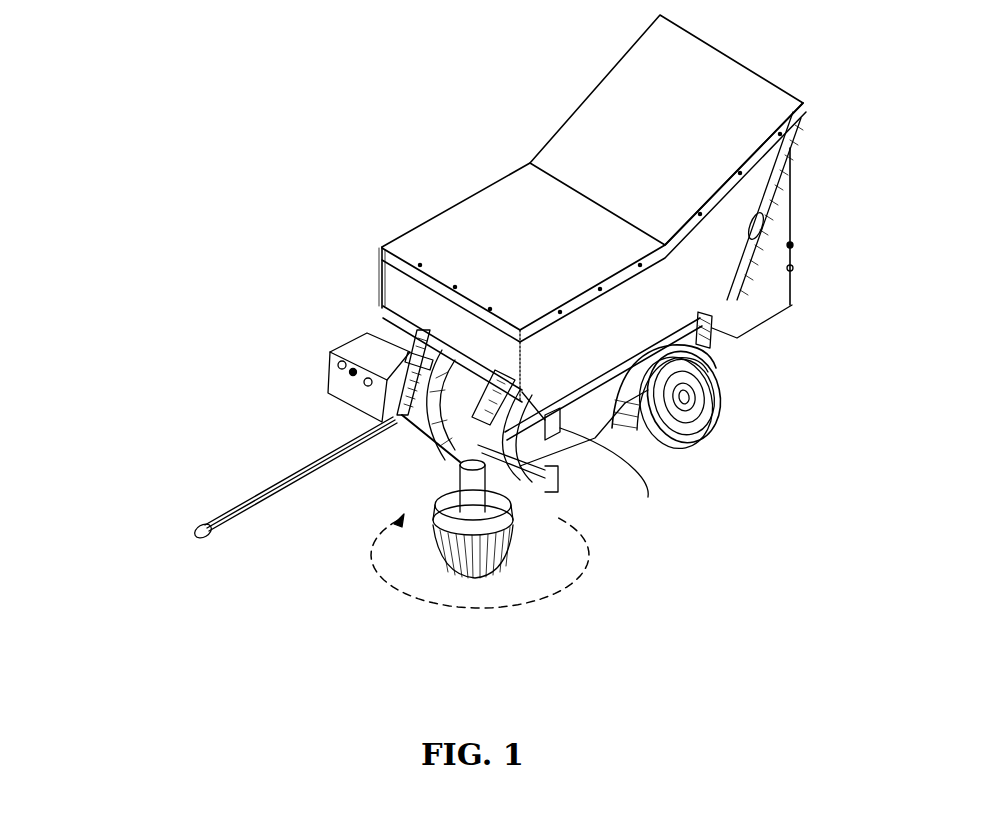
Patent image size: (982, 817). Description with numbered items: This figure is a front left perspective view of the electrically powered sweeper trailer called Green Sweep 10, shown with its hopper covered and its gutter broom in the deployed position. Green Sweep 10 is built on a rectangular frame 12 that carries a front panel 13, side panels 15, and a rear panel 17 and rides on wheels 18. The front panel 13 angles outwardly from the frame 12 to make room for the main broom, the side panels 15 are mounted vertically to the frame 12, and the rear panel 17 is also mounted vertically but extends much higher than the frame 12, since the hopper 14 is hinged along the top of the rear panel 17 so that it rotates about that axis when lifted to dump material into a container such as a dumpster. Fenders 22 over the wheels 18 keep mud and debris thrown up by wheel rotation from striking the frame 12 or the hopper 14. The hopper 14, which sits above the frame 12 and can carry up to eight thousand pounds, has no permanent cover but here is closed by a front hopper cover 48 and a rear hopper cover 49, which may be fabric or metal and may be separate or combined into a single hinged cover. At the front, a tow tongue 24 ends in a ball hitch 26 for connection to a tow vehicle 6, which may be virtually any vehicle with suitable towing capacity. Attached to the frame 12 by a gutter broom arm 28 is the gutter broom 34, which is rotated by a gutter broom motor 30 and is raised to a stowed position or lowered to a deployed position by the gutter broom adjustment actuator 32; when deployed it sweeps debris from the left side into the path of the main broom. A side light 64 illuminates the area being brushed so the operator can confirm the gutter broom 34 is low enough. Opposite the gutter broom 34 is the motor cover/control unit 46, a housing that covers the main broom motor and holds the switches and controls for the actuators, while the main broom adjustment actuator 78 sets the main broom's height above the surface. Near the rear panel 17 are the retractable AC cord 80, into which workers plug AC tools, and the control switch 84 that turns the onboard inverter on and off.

The Green Sweep 10 is at (272, 138).
The rear hopper cover 49 is at (622, 115).
The front hopper cover 48 is at (413, 260).
The frame 12 is at (363, 328).
The motor cover/control unit 46 is at (367, 342).
The main broom adjustment actuator 78 is at (420, 348).
The gutter broom adjustment actuator 32 is at (522, 361).
The front panel 13 is at (462, 419).
The side panels 15 is at (673, 349).
The rear panel 17 is at (790, 178).
The control switch 84 is at (790, 245).
The retractable AC cord 80 is at (790, 268).
The hopper 14 is at (737, 338).
The wheels 18 is at (703, 430).
The fenders 22 is at (638, 418).
The side light 64 is at (648, 497).
The tow tongue 24 is at (332, 458).
The ball hitch 26 is at (207, 526).
The tow vehicle 6 is at (180, 547).
The gutter broom motor 30 is at (462, 488).
The gutter broom arm 28 is at (558, 488).
The gutter broom 34 is at (478, 572).